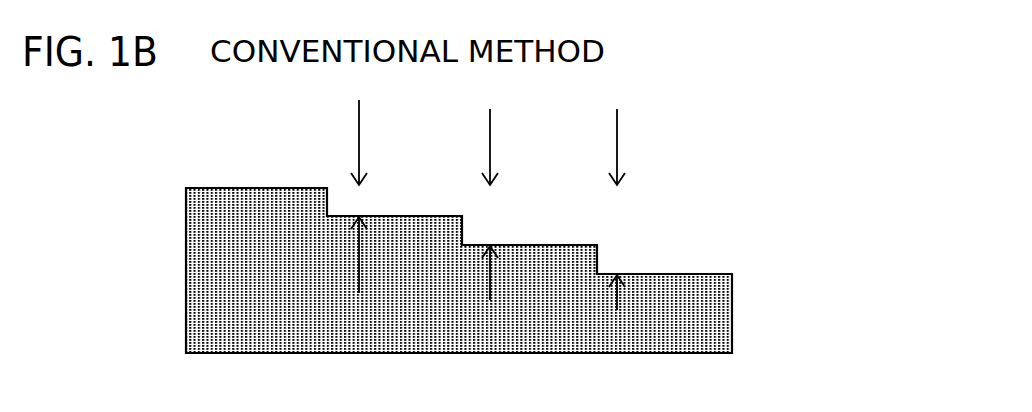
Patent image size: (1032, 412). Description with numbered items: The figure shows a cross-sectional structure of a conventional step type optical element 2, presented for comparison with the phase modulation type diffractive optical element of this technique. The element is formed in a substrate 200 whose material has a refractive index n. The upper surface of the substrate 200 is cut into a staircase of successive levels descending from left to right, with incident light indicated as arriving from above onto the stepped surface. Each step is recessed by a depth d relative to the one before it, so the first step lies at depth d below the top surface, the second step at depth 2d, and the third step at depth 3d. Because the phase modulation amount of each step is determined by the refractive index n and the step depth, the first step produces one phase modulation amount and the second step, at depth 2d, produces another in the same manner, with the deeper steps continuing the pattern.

The conventional step type optical element 2 is at (757, 150).
The substrate 200 is at (715, 328).
The refractive index n is at (256, 159).
The depth of each step d is at (372, 269).
The depth of second step 2d is at (512, 283).
The depth of third step 3d is at (640, 298).